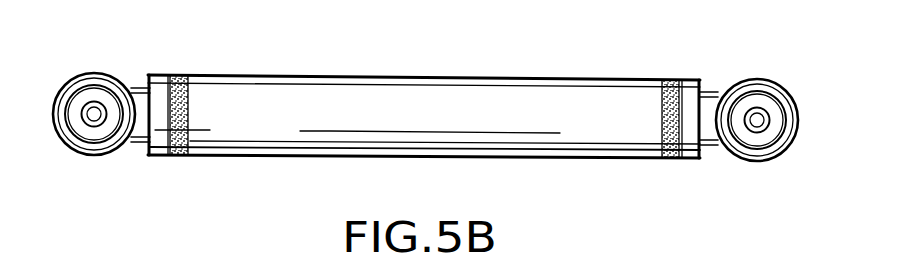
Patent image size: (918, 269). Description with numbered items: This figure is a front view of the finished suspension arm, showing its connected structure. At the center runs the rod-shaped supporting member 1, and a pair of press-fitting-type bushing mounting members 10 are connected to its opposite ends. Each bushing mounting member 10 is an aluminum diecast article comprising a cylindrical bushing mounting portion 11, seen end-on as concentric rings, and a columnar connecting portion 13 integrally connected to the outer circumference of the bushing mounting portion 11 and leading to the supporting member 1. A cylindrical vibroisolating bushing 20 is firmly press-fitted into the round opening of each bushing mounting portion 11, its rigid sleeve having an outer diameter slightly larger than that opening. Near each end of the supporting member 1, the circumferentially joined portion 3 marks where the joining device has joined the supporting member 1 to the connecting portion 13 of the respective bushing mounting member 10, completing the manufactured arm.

The supporting member 1 is at (445, 90).
The circumferentially joined portion 3 is at (181, 82).
The bushing mounting member 10 is at (92, 73).
The bushing mounting portion 11 is at (100, 152).
The connecting portion 13 is at (138, 141).
The vibroisolating bushing 20 is at (62, 86).